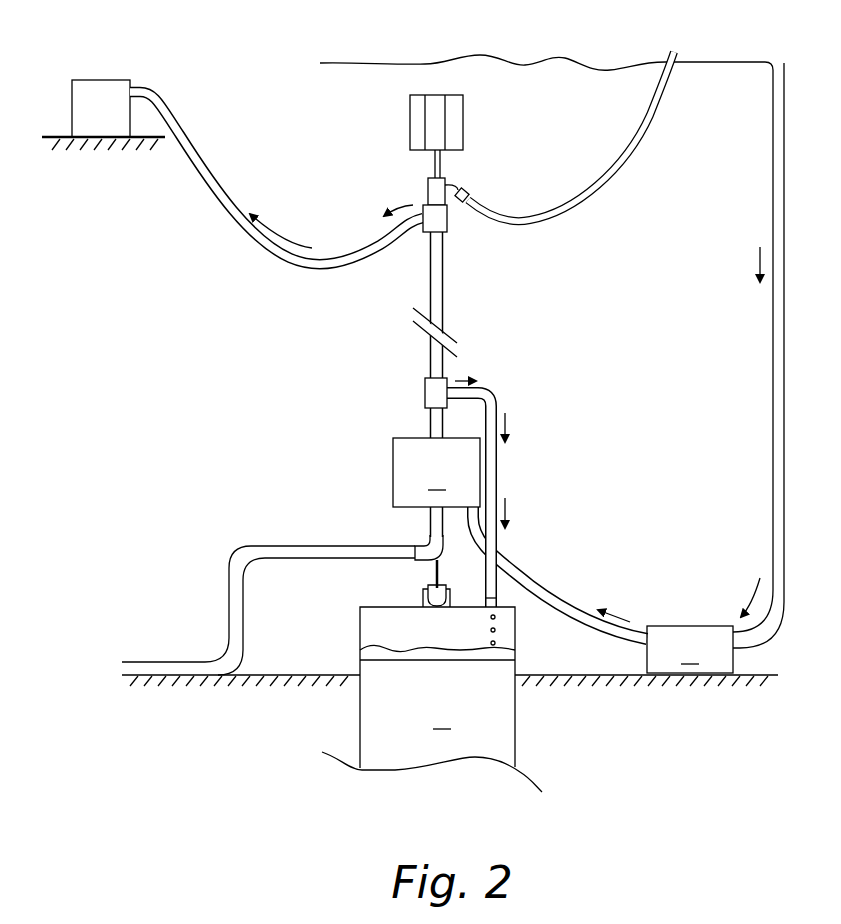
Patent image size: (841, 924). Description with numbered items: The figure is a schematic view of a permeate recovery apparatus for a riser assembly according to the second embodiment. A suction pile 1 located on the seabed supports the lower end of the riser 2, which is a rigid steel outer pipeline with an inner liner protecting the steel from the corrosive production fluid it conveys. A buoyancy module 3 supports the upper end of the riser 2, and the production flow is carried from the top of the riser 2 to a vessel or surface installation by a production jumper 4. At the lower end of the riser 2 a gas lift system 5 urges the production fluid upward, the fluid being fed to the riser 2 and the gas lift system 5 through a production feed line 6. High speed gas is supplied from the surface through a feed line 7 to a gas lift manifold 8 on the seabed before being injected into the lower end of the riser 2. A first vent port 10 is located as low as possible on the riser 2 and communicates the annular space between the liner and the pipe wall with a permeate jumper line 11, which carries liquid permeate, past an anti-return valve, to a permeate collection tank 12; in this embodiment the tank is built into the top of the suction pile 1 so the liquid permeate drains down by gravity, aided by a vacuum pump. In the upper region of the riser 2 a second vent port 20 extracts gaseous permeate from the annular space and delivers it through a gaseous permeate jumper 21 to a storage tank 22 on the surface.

The suction pile 1 is at (432, 699).
The riser 2 is at (428, 277).
The buoyancy module 3 is at (456, 131).
The production jumper 4 is at (628, 158).
The gas lift system 5 is at (436, 472).
The production feed line 6 is at (245, 562).
The feed line 7 is at (772, 422).
The gas lift manifold 8 is at (603, 590).
The first vent port 10 is at (432, 390).
The permeate jumper line 11 is at (492, 392).
The permeate collection tank 12 is at (510, 628).
The second vent port 20 is at (438, 217).
The gaseous permeate jumper 21 is at (227, 198).
The storage tank 22 is at (103, 92).